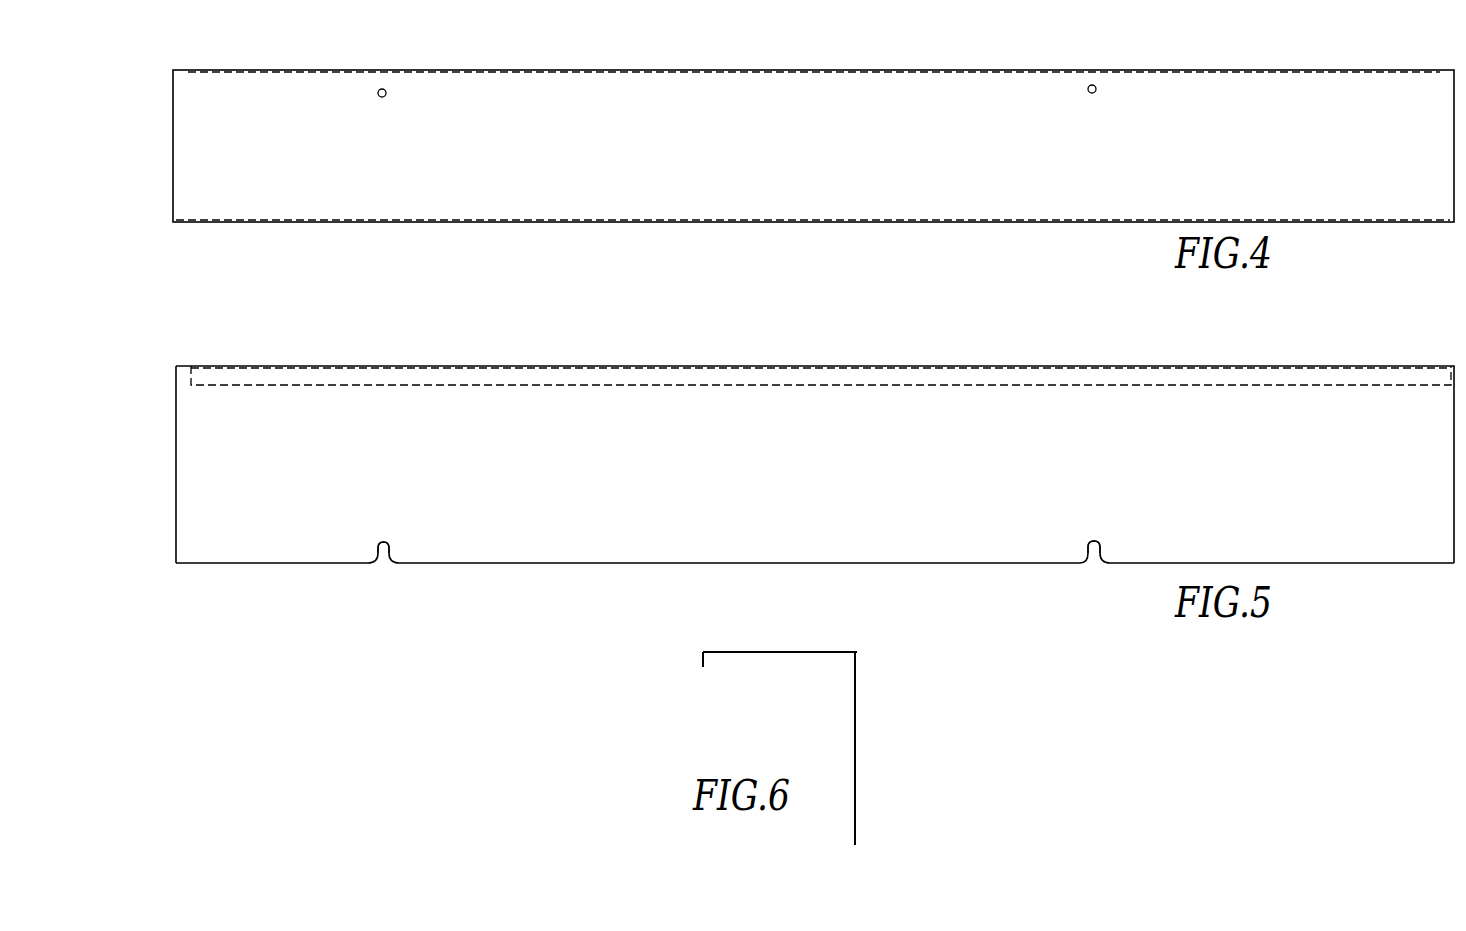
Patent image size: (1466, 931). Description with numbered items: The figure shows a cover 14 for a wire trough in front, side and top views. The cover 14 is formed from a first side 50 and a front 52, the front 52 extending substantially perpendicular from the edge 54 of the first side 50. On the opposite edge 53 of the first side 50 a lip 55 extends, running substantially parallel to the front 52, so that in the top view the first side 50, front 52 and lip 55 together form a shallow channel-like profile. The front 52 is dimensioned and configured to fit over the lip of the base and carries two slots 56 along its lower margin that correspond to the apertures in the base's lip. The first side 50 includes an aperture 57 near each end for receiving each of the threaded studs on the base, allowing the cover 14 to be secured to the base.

In FIG. 4, the cover 14 is at (361, 243).
In FIG. 5, the cover 14 is at (570, 349).
In FIG. 6, the cover 14 is at (931, 668).
In FIG. 4, the first side 50 is at (765, 145).
In FIG. 6, the first side 50 is at (807, 652).
In FIG. 5, the front 52 is at (787, 466).
In FIG. 6, the front 52 is at (857, 735).
In FIG. 6, the opposite edge 53 is at (703, 652).
In FIG. 4, the edge 54 is at (730, 222).
In FIG. 5, the edge 54 is at (870, 367).
In FIG. 6, the edge 54 is at (855, 652).
In FIG. 6, the lip 55 is at (706, 662).
In FIG. 5, the slots 56 is at (384, 541).
In FIG. 4, the aperture 57 is at (378, 96).